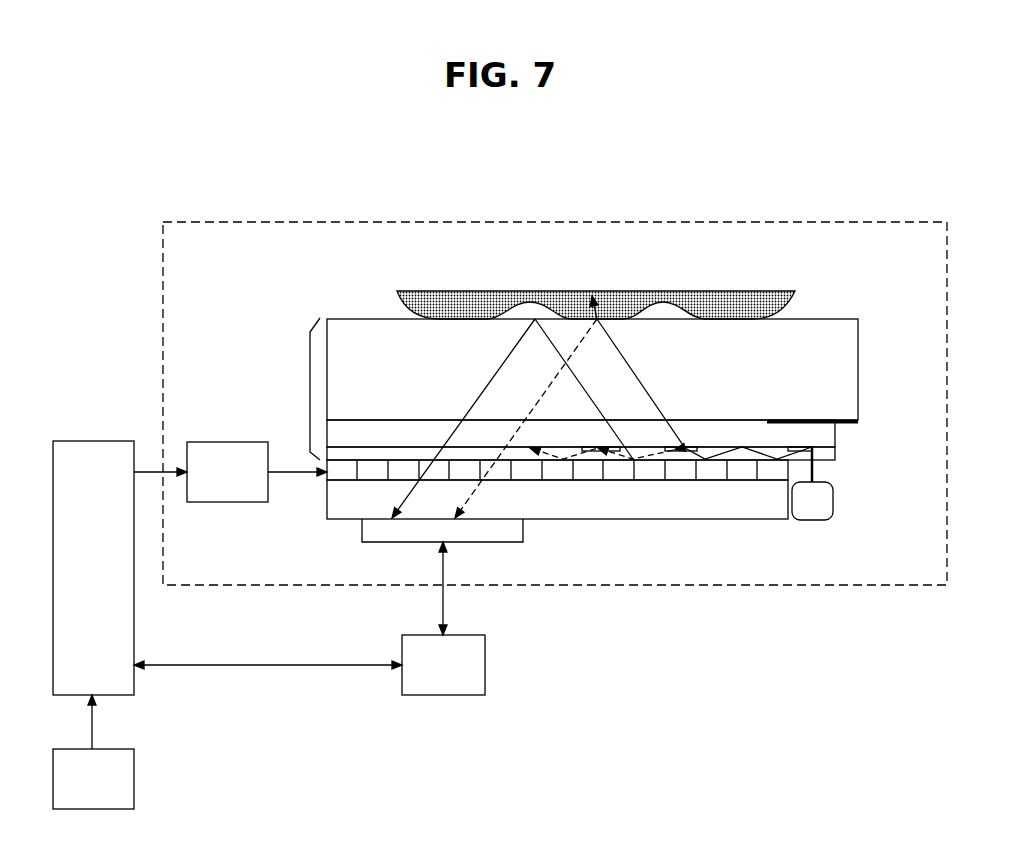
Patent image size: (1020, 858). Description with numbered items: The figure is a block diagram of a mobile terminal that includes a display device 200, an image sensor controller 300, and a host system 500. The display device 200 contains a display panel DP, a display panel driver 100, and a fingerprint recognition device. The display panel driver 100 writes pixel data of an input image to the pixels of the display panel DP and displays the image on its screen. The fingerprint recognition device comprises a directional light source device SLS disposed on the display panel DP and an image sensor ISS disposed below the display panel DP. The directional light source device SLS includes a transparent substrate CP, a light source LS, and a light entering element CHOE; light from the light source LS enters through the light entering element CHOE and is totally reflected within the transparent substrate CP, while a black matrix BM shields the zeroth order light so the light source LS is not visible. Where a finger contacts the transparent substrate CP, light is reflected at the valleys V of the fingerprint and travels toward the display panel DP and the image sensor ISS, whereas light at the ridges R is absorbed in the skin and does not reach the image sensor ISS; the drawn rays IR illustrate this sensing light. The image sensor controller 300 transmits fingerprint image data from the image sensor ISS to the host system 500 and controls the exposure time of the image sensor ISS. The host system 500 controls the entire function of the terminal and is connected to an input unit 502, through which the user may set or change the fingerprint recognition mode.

The display panel driver 100 is at (208, 484).
The display device 200 is at (271, 221).
The image sensor controller 300 is at (424, 676).
The host system 500 is at (74, 579).
The input unit 502 is at (74, 791).
The transparent substrate CP is at (848, 368).
The black matrix BM is at (858, 420).
The light entering element CHOE is at (833, 448).
The light source LS is at (820, 498).
The display panel DP is at (340, 474).
The image sensor ISS is at (515, 530).
The directional light source device SLS is at (295, 389).
The infrared light IR is at (602, 407).
The valleys V is at (528, 298).
The ridges R is at (606, 318).